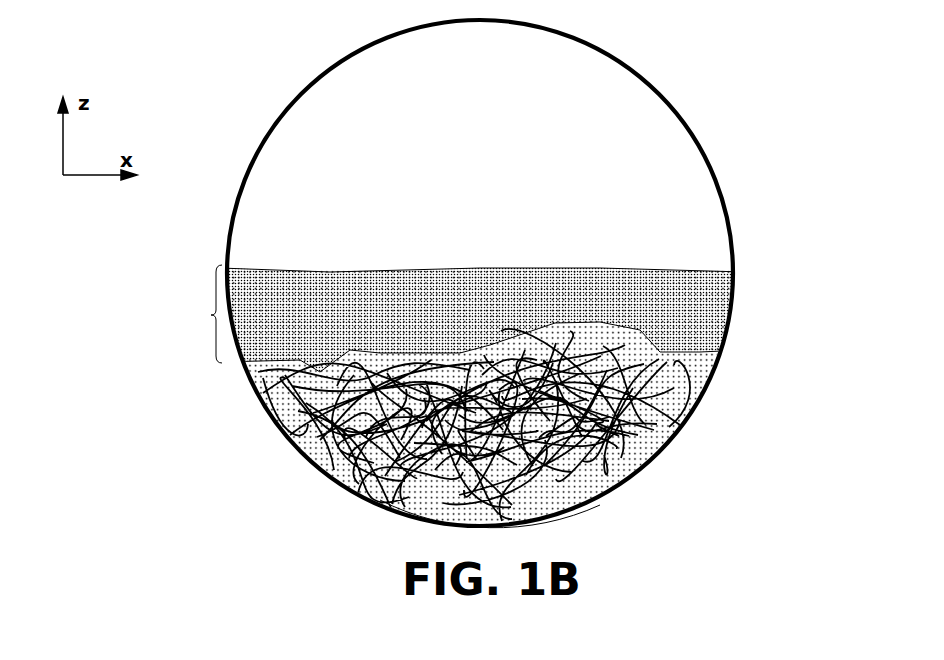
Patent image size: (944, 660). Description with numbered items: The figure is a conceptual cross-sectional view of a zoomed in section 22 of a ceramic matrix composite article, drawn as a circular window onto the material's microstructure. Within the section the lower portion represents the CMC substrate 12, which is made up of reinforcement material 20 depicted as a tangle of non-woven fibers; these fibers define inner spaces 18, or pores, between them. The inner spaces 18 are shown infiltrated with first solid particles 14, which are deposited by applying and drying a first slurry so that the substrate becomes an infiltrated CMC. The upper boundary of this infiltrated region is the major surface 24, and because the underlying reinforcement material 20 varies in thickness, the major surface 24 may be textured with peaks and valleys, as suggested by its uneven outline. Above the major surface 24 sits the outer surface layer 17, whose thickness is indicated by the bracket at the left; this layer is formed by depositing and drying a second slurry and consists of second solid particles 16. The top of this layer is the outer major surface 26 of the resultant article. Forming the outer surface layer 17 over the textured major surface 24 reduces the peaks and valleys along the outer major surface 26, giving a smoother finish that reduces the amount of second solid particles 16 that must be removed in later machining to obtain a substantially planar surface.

The CMC substrate 12 is at (690, 431).
The first solid particles 14 is at (390, 367).
The second solid particles 16 is at (657, 320).
The outer surface layer 17 is at (202, 314).
The inner spaces 18 is at (623, 483).
The reinforcement material 20 is at (270, 375).
The zoomed in section 22 is at (266, 125).
The major surface 24 is at (669, 350).
The outer major surface 26 is at (693, 270).